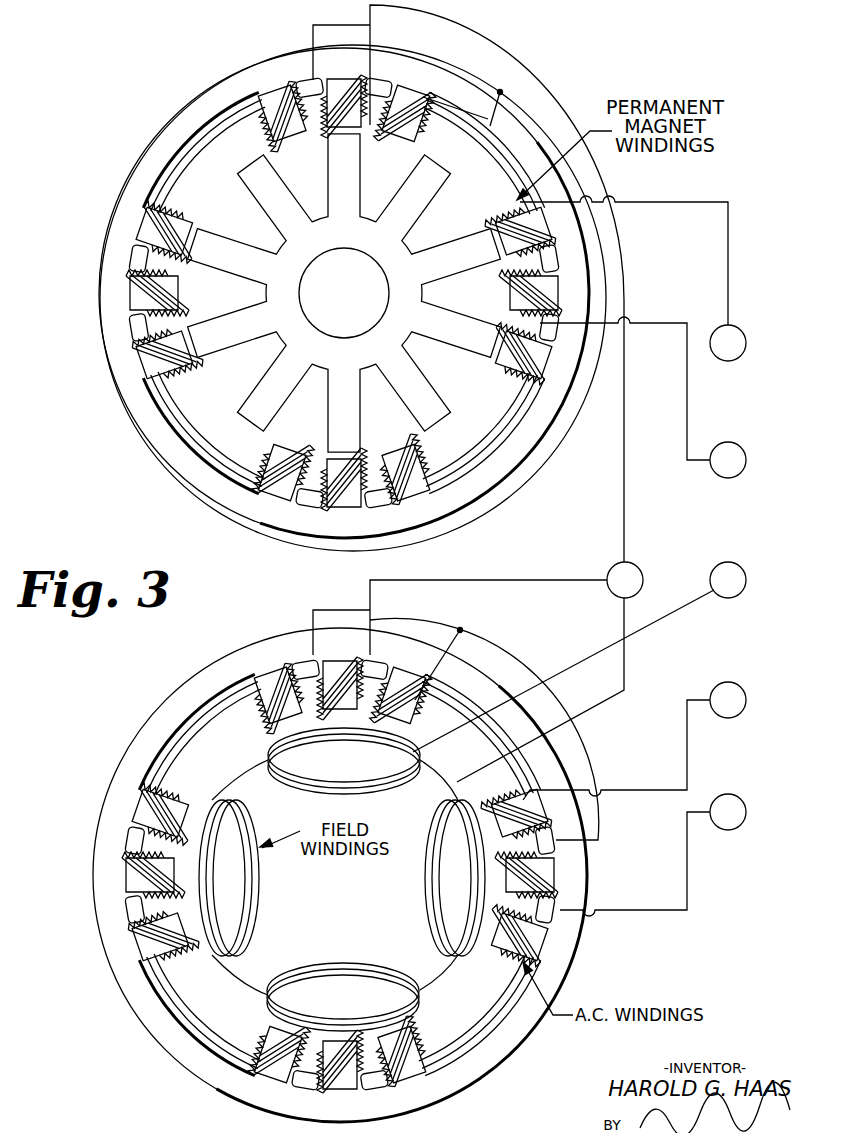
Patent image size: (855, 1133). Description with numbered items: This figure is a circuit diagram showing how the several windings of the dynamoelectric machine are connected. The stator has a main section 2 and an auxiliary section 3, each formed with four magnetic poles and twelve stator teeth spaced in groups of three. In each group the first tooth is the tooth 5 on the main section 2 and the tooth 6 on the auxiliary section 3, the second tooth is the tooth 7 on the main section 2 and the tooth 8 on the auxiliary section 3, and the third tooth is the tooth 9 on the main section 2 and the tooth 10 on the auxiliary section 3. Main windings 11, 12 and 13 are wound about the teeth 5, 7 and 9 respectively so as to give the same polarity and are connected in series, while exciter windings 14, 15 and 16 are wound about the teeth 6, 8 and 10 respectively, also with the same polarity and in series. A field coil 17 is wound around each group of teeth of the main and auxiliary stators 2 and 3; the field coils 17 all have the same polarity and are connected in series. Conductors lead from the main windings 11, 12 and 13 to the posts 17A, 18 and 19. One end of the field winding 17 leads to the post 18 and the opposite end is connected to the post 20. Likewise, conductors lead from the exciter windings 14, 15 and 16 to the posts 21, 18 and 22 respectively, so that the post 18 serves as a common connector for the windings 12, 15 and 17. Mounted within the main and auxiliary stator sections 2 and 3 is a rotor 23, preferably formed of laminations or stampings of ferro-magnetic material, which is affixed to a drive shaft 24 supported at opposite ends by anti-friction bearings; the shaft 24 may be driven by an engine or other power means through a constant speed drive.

The main section 2 is at (165, 1053).
The auxiliary section 3 is at (152, 455).
The first tooth 5 is at (268, 722).
The first tooth 6 is at (268, 141).
The second tooth 7 is at (352, 706).
The second tooth 8 is at (350, 128).
The third tooth 9 is at (410, 712).
The third tooth 10 is at (410, 133).
The main winding 11 is at (290, 690).
The main winding 12 is at (342, 680).
The main winding 13 is at (398, 690).
The exciter winding 14 is at (292, 108).
The exciter winding 15 is at (342, 100).
The exciter winding 16 is at (400, 100).
The field coil 17 is at (385, 790).
The post 17A is at (740, 714).
The post 18 is at (641, 590).
The post 19 is at (740, 827).
The post 20 is at (740, 594).
The post 21 is at (735, 360).
The post 22 is at (740, 474).
The rotor 23 is at (329, 235).
The drive shaft 24 is at (331, 302).